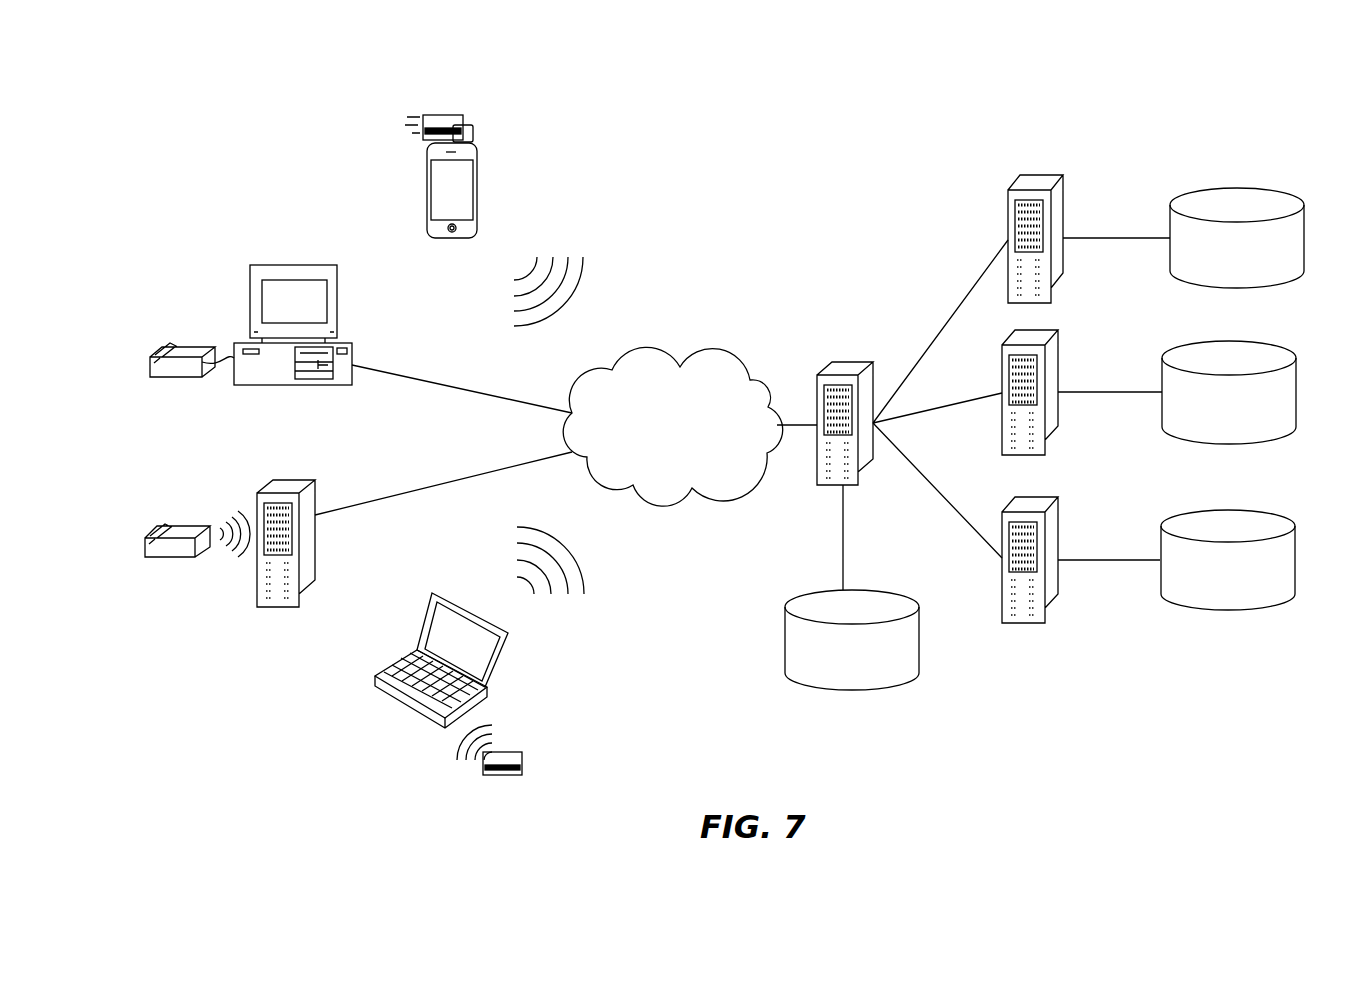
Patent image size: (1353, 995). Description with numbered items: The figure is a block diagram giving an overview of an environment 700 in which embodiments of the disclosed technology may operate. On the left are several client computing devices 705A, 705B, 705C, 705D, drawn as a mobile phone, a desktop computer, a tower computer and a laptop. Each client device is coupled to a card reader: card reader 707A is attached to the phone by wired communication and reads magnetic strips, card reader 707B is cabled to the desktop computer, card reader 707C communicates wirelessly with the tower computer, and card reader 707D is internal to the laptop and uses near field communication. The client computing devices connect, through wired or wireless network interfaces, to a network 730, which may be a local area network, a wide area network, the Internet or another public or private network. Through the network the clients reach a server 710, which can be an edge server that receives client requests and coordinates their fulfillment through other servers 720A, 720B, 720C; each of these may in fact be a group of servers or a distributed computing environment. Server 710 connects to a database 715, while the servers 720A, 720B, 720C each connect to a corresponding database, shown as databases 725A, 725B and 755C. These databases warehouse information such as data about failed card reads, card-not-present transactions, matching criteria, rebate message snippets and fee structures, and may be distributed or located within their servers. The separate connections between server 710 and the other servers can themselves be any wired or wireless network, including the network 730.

The environment 700 is at (858, 155).
The client computing device 705A is at (477, 157).
The client computing device 705B is at (332, 265).
The client computing device 705C is at (307, 482).
The client computing device 705D is at (503, 662).
The card reader 707A is at (468, 125).
The card reader 707B is at (202, 345).
The card reader 707C is at (202, 525).
The card reader 707D is at (460, 717).
The server 710 is at (855, 358).
The database 715 is at (898, 593).
The server 720A is at (1063, 177).
The server 720B is at (1058, 332).
The server 720C is at (1058, 498).
The database 725A is at (1233, 187).
The database 725B is at (1225, 340).
The database 755C is at (1225, 508).
The network 730 is at (720, 353).